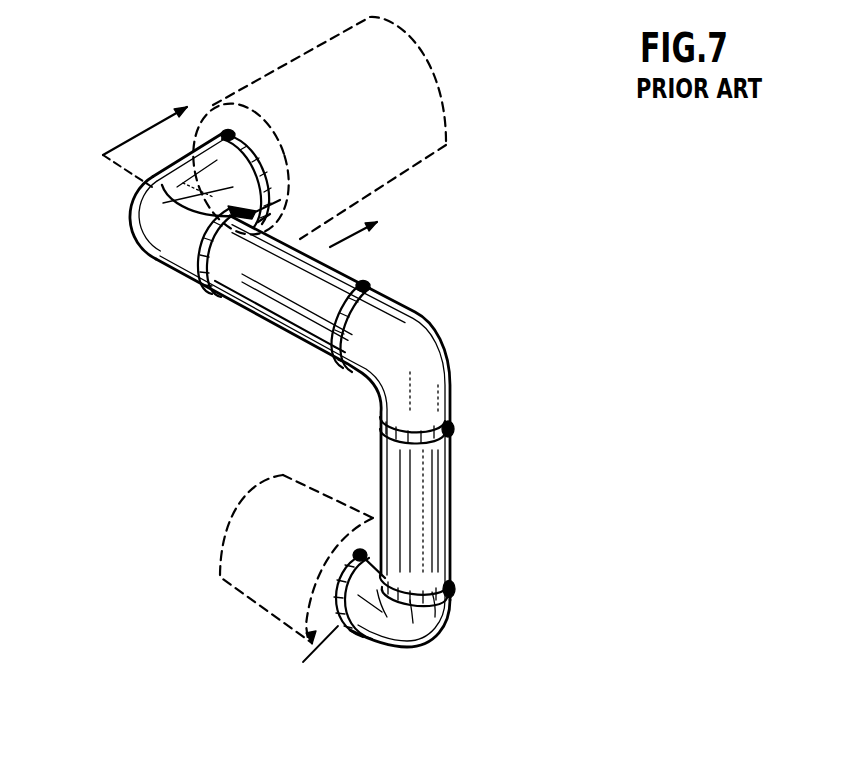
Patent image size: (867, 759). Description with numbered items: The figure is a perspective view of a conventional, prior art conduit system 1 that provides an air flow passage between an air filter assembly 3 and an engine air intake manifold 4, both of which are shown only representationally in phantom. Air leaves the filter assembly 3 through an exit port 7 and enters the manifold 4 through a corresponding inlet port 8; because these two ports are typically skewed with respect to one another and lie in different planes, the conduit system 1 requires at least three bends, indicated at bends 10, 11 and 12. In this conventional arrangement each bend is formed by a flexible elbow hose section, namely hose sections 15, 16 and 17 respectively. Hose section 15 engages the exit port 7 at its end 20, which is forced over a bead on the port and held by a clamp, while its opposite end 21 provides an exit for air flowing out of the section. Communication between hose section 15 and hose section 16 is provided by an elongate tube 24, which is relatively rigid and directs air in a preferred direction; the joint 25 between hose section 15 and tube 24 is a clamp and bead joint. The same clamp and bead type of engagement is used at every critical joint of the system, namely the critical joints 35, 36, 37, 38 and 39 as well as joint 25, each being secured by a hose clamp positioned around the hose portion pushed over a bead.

The conduit system 1 is at (415, 295).
The air filter assembly 3 is at (300, 57).
The engine air intake manifold 4 is at (330, 495).
The exit port 7 is at (222, 133).
The inlet port 8 is at (253, 377).
The bend 10 is at (131, 219).
The bend 11 is at (450, 346).
The bend 12 is at (423, 648).
The hose section 15 is at (137, 190).
The hose section 16 is at (427, 320).
The hose section 17 is at (445, 608).
The end 20 is at (283, 195).
The end 21 is at (203, 288).
The elongate tube 24 is at (297, 338).
The joint 25 is at (218, 307).
The critical joint 35 is at (282, 211).
The critical joint 36 is at (343, 383).
The critical joint 37 is at (460, 440).
The critical joint 38 is at (463, 578).
The critical joint 39 is at (360, 647).